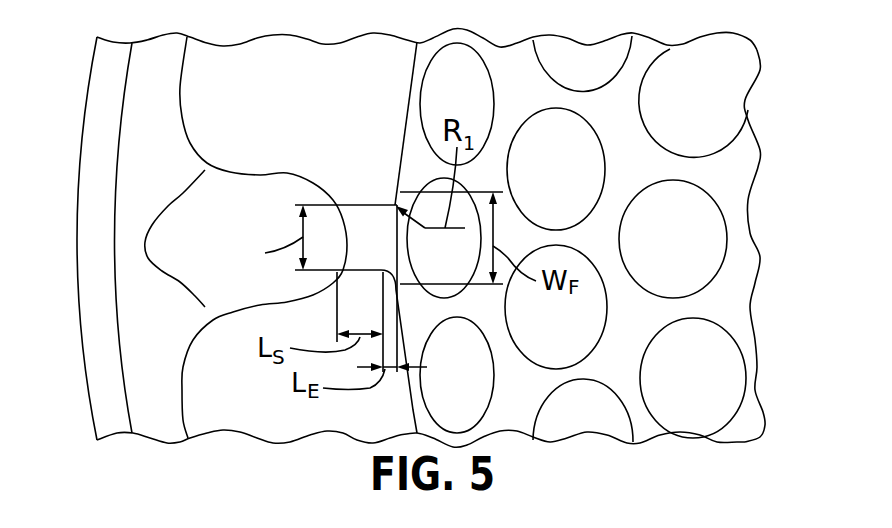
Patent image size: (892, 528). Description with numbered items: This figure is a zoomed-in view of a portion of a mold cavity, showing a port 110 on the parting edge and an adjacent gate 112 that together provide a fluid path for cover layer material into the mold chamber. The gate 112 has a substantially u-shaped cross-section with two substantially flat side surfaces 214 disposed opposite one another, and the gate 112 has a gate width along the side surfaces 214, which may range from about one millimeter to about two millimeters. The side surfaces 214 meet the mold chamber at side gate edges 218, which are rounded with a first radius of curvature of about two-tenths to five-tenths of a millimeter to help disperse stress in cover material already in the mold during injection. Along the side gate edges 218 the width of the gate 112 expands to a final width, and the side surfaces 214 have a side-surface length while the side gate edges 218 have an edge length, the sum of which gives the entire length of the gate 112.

The port 110 is at (256, 195).
The gate 112 is at (368, 223).
The side surfaces 214 is at (343, 207).
The side gate edges 218 is at (394, 205).